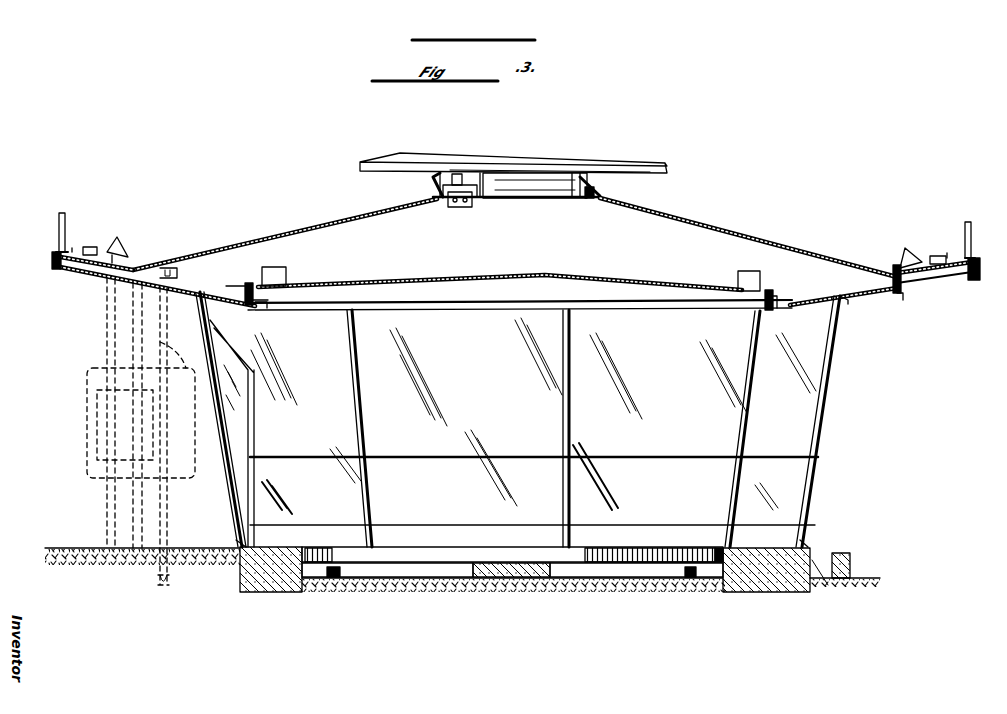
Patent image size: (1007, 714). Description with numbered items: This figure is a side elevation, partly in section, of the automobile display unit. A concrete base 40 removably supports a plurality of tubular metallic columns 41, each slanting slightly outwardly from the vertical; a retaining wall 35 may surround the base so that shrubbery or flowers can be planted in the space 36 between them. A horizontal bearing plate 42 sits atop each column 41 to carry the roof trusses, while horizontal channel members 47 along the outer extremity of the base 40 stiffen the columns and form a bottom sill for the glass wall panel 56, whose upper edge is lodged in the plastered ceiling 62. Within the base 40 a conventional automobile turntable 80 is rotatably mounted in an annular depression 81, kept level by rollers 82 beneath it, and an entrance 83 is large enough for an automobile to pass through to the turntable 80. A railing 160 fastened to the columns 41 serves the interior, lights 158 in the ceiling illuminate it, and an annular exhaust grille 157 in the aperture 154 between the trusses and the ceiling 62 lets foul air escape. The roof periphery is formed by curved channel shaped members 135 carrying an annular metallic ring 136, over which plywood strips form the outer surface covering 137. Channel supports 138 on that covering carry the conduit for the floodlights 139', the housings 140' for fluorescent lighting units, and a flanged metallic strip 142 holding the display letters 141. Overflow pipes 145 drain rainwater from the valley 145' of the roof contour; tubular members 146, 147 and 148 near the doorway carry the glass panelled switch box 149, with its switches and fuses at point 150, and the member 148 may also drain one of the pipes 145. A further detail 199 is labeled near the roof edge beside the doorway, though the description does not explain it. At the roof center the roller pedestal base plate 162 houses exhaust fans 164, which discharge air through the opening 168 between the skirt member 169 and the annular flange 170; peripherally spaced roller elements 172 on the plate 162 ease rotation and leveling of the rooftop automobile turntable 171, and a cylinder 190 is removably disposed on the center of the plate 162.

The retaining wall 35 is at (854, 566).
The space 36 is at (826, 570).
The base 40 is at (235, 573).
The tubular metallic columns 41 is at (228, 288).
The horizontal bearing plate 42 is at (848, 305).
The horizontal channel members 47 is at (236, 527).
The glass wall panel 56 is at (460, 318).
The plastered ceiling 62 is at (570, 279).
The automobile turntable 80 is at (447, 550).
The annular depression 81 is at (594, 570).
The rollers 82 is at (333, 565).
The entrance 83 is at (200, 324).
The curved channel shaped members 135 is at (60, 273).
The annular metallic ring 136 is at (53, 261).
The outer surface covering 137 is at (290, 233).
The channel supports 138 is at (73, 249).
The floodlights 139' is at (514, 237).
The housings for fluorescent lighting units 140' is at (514, 238).
The display letters 141 is at (58, 224).
The flanged metallic strip 142 is at (54, 252).
The overflow pipes 145 is at (921, 310).
The valley 145' is at (863, 264).
The tubular member 146 is at (106, 313).
The tubular member 147 is at (170, 336).
The tubular member 148 is at (181, 355).
The switch box 149 is at (98, 478).
The electrical switches, fuses, etc. 150 is at (98, 408).
The aperture 154 is at (240, 285).
The annular exhaust grille 157 is at (268, 307).
The lights 158 is at (288, 274).
The railing 160 is at (318, 458).
The roller pedestal base plate 162 is at (540, 200).
The exhaust fans 164 is at (457, 208).
The opening 168 is at (597, 195).
The skirt member 169 is at (600, 185).
The annular flange 170 is at (443, 190).
The automobile turntable 171 is at (570, 158).
The roller elements 172 is at (586, 199).
The cylinder 190 is at (512, 190).
The marker 199 is at (137, 266).